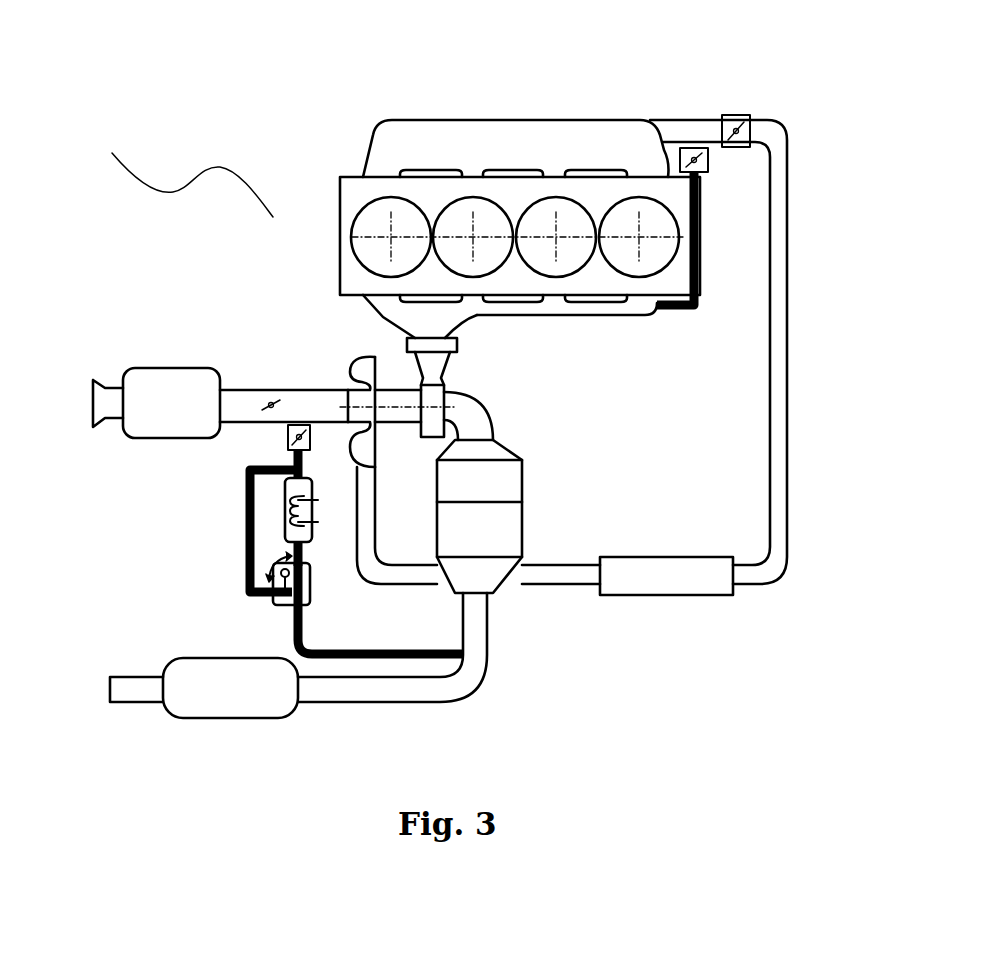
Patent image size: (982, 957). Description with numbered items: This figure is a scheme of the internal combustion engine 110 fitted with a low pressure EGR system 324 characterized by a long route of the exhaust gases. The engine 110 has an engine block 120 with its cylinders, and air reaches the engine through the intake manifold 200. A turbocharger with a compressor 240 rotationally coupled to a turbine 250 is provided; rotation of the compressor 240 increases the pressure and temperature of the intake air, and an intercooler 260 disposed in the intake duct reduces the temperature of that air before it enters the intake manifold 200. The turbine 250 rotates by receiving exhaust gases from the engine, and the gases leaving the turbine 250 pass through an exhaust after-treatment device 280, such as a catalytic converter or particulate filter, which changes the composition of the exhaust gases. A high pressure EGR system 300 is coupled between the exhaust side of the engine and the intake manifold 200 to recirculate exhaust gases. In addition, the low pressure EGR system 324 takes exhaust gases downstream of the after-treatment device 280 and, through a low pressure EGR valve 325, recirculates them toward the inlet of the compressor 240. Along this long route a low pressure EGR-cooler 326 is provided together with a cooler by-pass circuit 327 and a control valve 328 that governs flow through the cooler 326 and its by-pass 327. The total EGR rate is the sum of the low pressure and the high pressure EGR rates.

The internal combustion engine 110 is at (185, 172).
The engine block 120 is at (377, 233).
The intake manifold 200 is at (470, 202).
The compressor 240 is at (355, 377).
The turbine 250 is at (440, 394).
The intercooler 260 is at (701, 595).
The exhaust after-treatment device 280 is at (493, 488).
The exhaust gas recirculation (EGR) system 300 is at (715, 287).
The low pressure EGR system 324 is at (250, 543).
The low pressure EGR valve 325 is at (290, 437).
The low pressure EGR-cooler 326 is at (288, 510).
The cooler by-pass circuit 327 is at (245, 532).
The control valve 328 is at (273, 583).